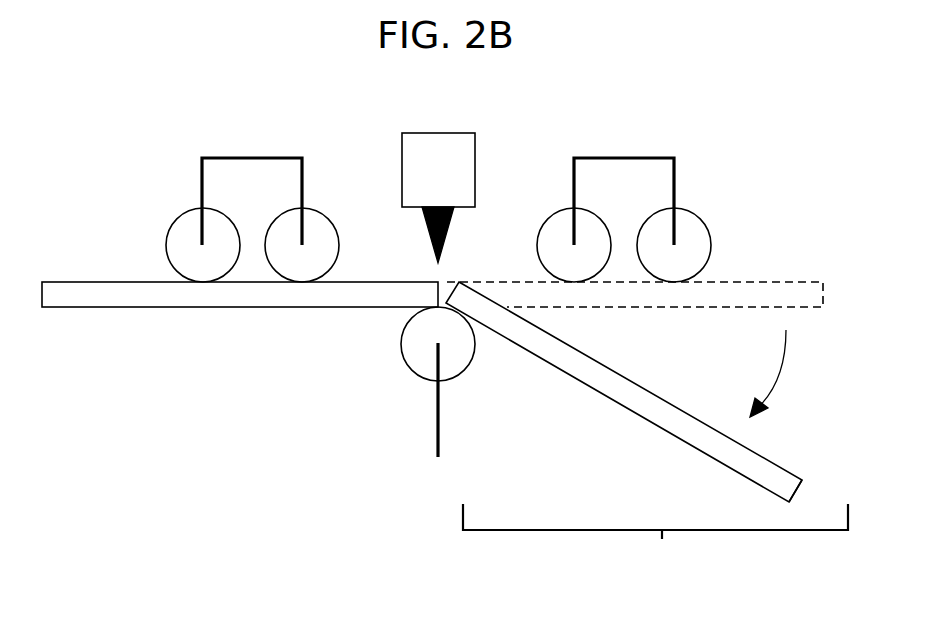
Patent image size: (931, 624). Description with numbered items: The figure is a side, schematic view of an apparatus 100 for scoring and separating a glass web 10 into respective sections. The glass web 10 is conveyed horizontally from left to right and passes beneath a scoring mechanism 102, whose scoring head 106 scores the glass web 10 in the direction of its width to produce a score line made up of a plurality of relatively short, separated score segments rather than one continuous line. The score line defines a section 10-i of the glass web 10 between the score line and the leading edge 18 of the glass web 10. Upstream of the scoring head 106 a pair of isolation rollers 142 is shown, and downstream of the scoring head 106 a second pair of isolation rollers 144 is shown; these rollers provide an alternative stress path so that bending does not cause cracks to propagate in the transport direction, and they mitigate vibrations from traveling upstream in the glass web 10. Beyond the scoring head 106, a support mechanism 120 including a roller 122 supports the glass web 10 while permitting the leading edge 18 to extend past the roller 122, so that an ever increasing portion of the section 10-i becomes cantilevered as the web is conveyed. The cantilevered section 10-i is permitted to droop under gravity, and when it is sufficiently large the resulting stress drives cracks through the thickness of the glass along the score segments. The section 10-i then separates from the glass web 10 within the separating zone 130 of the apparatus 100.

The apparatus 100 is at (707, 70).
The glass web 10 is at (142, 307).
The rollers 142 is at (240, 147).
The rollers 144 is at (613, 146).
The scoring mechanism 102 is at (420, 145).
The scoring head 106 is at (450, 258).
The section 10-i is at (617, 403).
The roller 122 is at (408, 340).
The support mechanism 120 is at (378, 410).
The leading edge 18 is at (803, 492).
The separating zone 130 is at (655, 538).